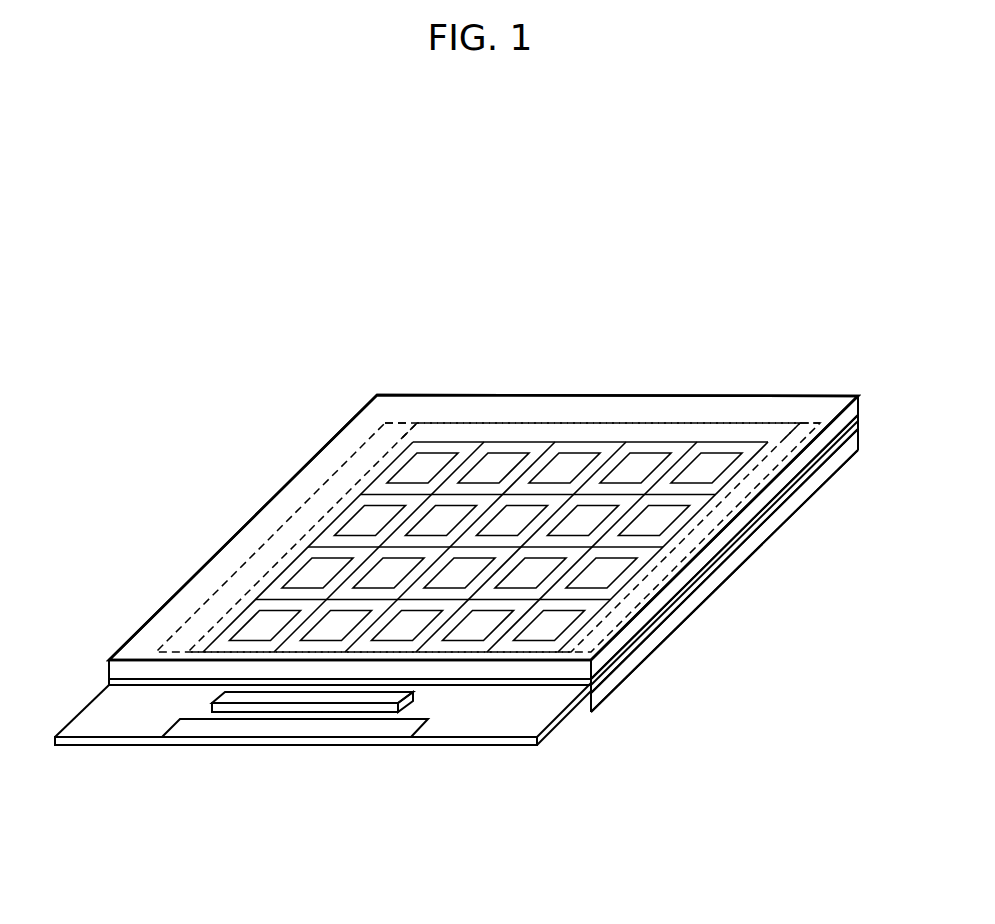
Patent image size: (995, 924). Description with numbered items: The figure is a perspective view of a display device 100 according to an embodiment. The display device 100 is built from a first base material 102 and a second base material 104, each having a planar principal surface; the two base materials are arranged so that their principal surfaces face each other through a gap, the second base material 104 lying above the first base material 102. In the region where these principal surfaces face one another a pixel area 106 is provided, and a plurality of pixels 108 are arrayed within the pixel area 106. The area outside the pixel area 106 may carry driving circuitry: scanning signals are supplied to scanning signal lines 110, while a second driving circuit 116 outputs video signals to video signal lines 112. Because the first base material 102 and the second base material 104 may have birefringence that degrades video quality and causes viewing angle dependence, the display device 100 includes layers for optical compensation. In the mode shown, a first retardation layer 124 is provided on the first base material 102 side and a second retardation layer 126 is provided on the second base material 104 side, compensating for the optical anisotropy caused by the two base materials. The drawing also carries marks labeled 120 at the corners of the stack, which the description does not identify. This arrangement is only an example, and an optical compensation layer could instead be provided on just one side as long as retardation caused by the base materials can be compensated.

The display device 100 is at (703, 313).
The first base material 102 is at (577, 710).
The second base material 104 is at (593, 697).
The pixel area 106 is at (533, 420).
The pixel 108 is at (440, 458).
The scanning signal line 110 is at (333, 543).
The video signal line 112 is at (270, 587).
The second driving circuit 116 is at (383, 705).
The alignment mark 120 is at (388, 425).
The first retardation layer 124 is at (610, 410).
The second retardation layer 126 is at (718, 577).